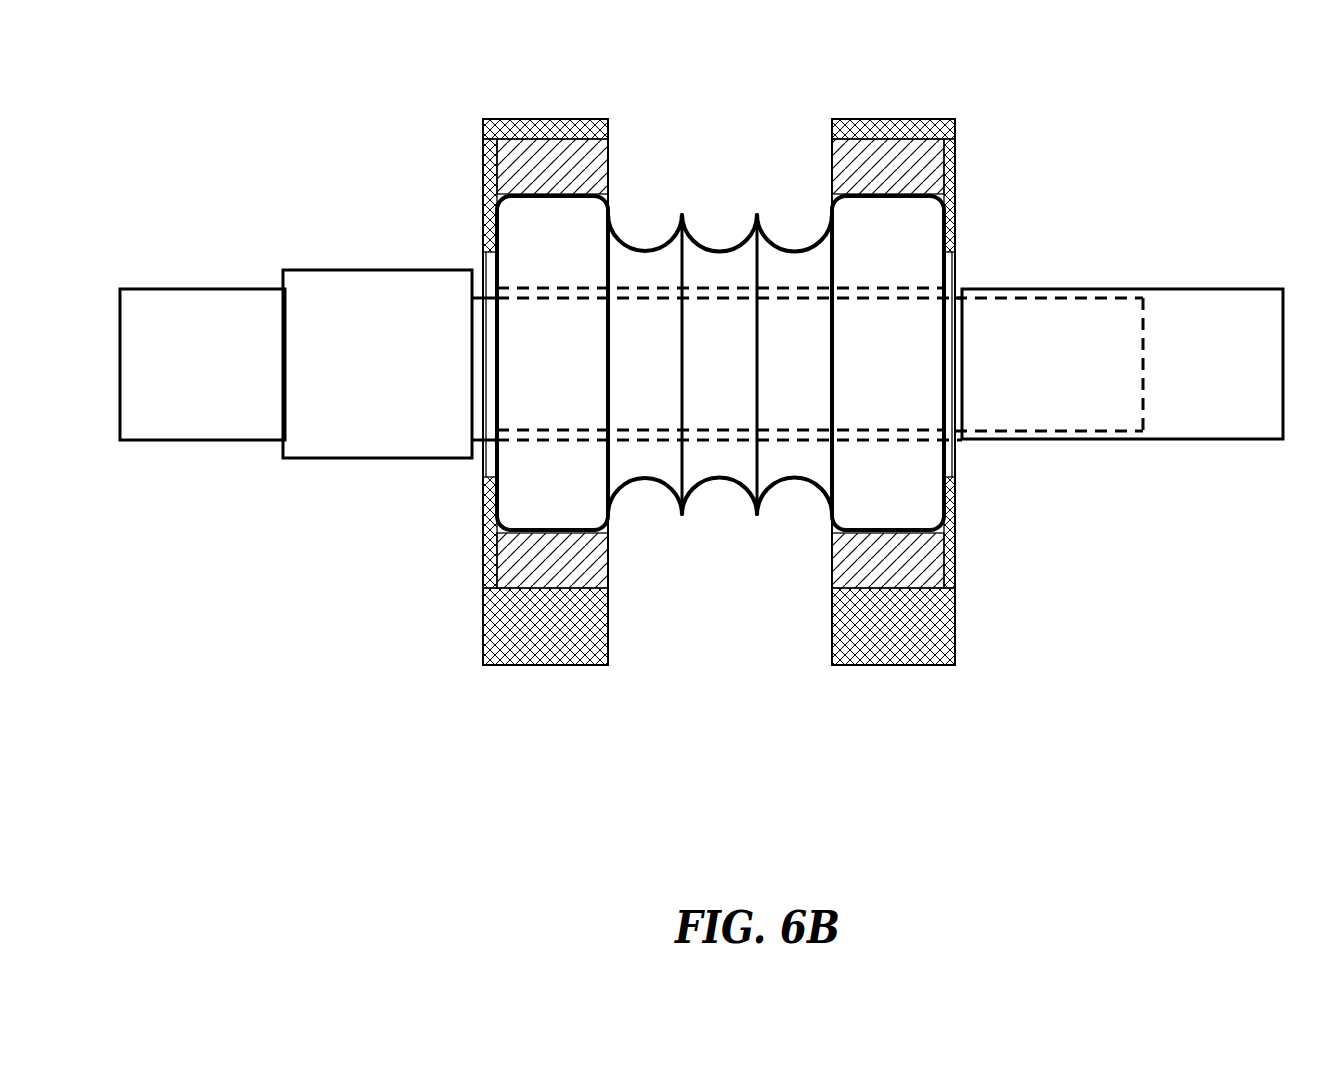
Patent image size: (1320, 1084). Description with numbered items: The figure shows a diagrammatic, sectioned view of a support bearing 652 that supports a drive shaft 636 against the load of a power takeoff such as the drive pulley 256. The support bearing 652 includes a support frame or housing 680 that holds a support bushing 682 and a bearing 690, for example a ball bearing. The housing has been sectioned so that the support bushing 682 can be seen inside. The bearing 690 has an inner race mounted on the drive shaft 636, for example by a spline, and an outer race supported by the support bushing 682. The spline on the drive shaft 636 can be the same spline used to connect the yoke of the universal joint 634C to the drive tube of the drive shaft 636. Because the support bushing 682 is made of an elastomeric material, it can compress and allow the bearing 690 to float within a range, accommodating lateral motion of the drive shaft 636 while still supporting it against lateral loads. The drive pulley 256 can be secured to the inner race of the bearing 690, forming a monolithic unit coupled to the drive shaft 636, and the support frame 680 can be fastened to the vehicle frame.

The support bearing 652 is at (1028, 132).
The support frame or housing 680 is at (495, 627).
The support bushing 682 is at (515, 178).
The bearing 690 is at (532, 257).
The drive pulley 256 is at (720, 457).
The universal joint 634C is at (377, 364).
The drive shaft 636 is at (701, 364).